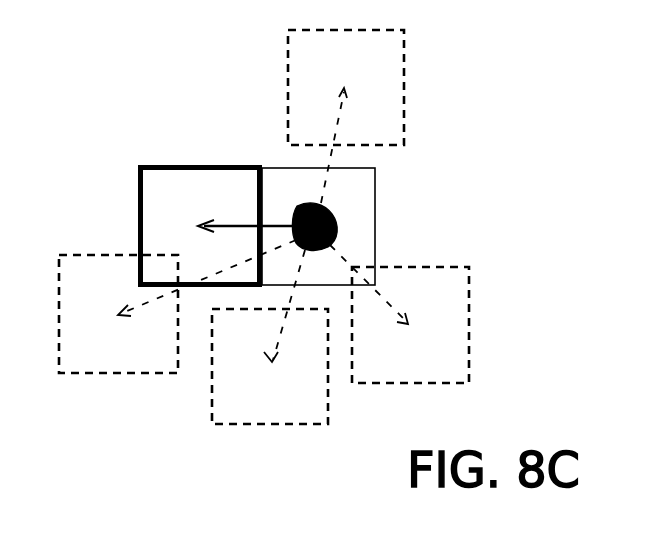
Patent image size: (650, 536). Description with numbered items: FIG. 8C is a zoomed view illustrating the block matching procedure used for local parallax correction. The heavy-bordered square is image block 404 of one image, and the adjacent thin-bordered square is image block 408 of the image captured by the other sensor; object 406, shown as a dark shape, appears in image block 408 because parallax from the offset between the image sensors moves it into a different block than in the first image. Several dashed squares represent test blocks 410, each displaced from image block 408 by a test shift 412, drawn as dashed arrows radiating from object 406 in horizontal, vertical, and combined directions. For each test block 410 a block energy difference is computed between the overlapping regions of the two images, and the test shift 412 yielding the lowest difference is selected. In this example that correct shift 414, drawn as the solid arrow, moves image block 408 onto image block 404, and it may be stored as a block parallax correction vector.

The image block 404 is at (199, 200).
The object 406 is at (338, 222).
The image block 408 is at (373, 186).
The test block 410 is at (345, 66).
The test shift 412 is at (340, 120).
The correct shift 414 is at (231, 224).